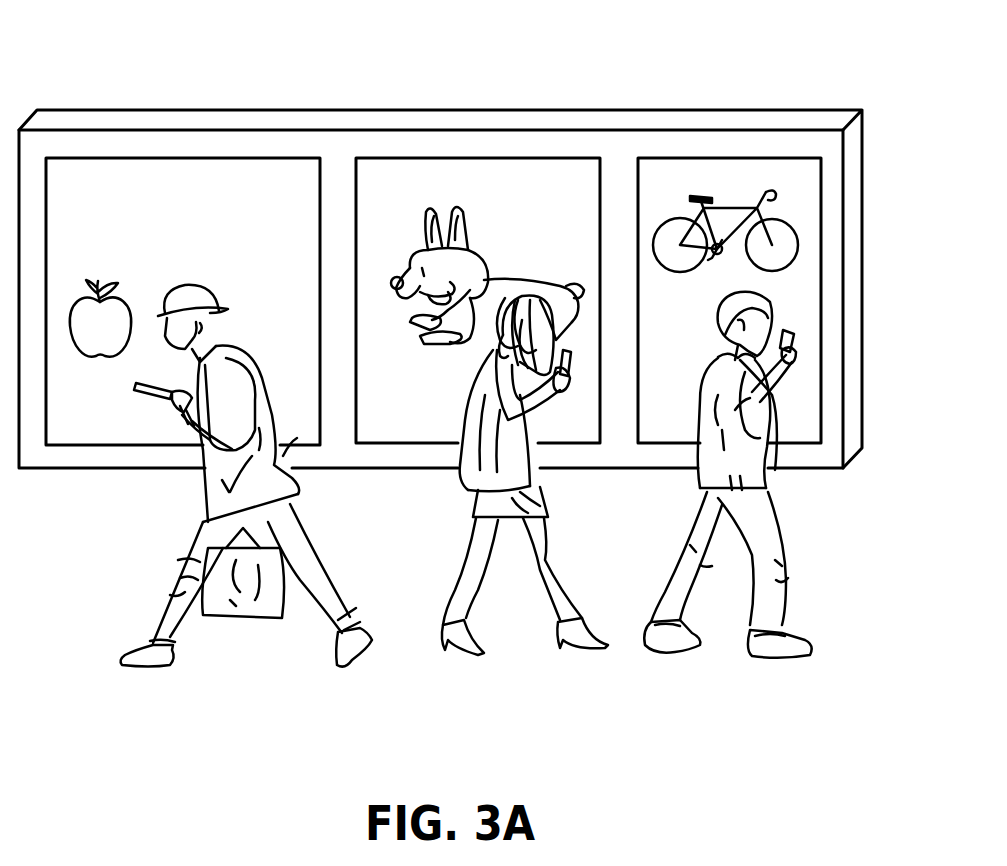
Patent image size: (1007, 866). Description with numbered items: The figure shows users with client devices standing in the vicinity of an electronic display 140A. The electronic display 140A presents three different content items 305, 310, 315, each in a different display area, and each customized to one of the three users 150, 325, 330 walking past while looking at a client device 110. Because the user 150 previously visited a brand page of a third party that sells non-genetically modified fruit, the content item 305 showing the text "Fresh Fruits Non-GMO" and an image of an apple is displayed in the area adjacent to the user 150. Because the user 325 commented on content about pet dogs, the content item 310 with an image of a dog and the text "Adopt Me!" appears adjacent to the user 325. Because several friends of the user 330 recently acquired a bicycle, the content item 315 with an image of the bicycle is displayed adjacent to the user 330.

The electronic display 140A is at (66, 100).
The content item 305 is at (248, 128).
The content item 310 is at (412, 132).
The content item 315 is at (708, 132).
The client device 110 is at (132, 412).
The user 150 is at (338, 527).
The user 325 is at (580, 486).
The user 330 is at (820, 528).